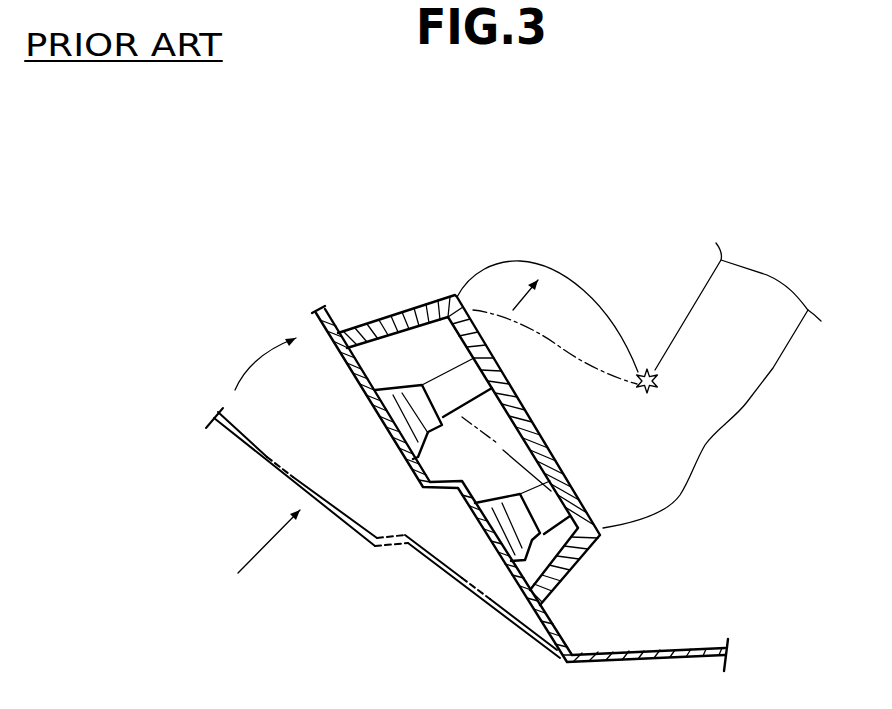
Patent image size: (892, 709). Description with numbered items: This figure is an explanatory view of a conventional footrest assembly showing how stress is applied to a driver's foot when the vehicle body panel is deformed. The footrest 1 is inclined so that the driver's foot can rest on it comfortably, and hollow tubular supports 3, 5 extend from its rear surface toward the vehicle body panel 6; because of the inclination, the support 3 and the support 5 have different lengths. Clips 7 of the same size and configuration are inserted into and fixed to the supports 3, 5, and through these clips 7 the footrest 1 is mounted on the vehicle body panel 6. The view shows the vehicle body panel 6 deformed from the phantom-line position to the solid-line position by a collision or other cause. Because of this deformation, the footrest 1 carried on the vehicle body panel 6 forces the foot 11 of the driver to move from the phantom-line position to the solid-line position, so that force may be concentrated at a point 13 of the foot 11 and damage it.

The footrest 1 is at (397, 307).
The support 3 is at (465, 380).
The support 5 is at (547, 515).
The vehicle body panel 6 is at (256, 453).
The clip 7 is at (387, 387).
The foot 11 is at (585, 288).
The point 13 is at (648, 366).